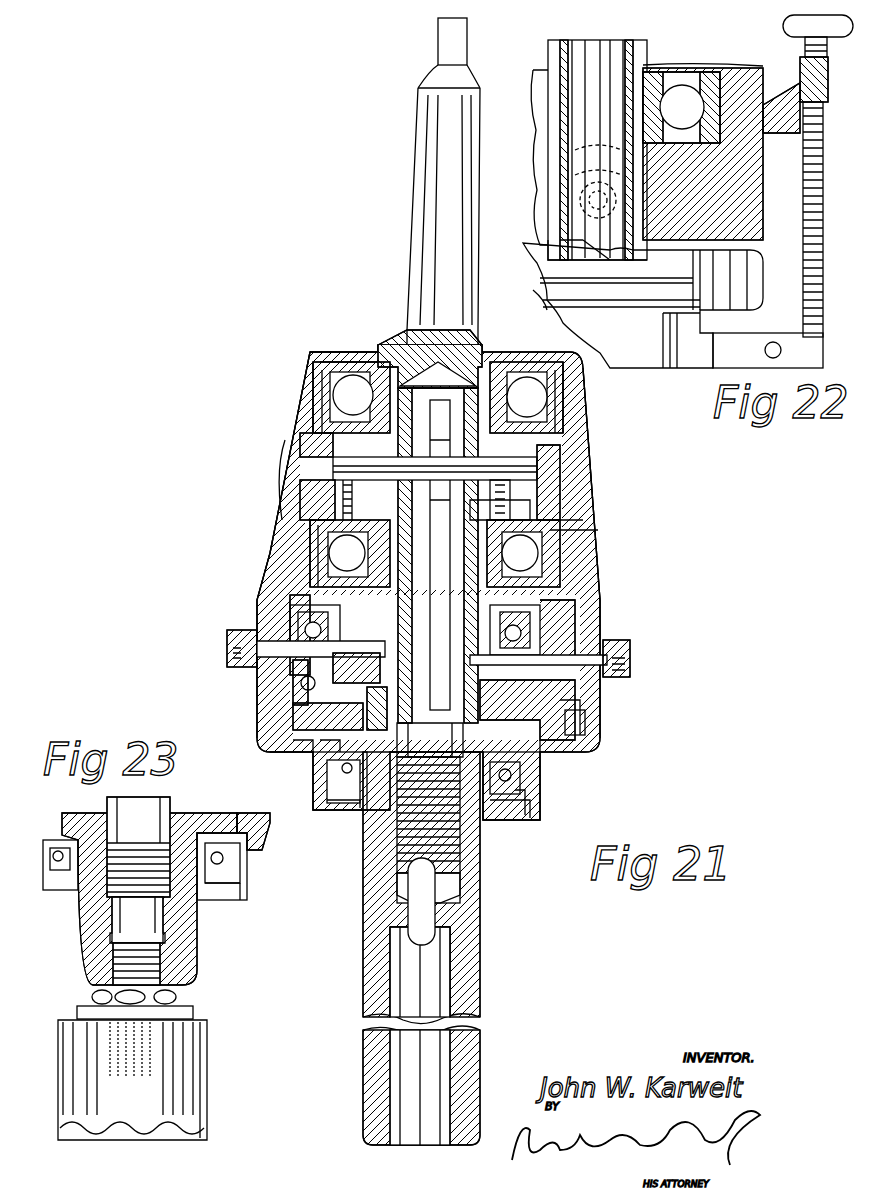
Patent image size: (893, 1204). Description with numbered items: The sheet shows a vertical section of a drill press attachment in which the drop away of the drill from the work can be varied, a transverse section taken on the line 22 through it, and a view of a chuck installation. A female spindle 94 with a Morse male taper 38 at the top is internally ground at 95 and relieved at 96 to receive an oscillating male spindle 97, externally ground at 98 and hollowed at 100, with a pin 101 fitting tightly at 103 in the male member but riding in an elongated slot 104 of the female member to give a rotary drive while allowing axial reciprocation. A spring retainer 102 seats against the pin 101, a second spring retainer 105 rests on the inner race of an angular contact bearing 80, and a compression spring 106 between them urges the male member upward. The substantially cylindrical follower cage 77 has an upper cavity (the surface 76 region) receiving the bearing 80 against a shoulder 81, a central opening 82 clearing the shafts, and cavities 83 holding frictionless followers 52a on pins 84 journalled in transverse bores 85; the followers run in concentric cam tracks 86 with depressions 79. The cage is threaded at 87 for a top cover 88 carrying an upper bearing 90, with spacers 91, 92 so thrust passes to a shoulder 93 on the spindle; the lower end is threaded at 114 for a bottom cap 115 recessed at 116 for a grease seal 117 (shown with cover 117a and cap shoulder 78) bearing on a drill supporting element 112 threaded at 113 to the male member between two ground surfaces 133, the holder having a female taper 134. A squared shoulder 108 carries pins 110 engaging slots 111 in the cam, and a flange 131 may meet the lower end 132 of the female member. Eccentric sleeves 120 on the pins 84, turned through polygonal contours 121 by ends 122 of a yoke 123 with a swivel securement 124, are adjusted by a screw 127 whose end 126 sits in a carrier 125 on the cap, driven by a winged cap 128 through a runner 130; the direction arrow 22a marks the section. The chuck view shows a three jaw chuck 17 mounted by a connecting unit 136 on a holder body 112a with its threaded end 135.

In FIG. 23, the three jaw chuck 17 is at (205, 1022).
In FIG. 21, the section line 22— 22 is at (650, 523).
In FIG. 21, the section arrow 22a is at (248, 544).
In FIG. 21, the Morse male taper 38 is at (410, 182).
In FIG. 21, the followers 52a is at (560, 610).
In FIG. 21, the housing 76 is at (610, 556).
In FIG. 21, the follower cage 77 is at (588, 583).
In FIG. 22, the follower cage 77 is at (740, 185).
In FIG. 21, the housing cap 78 is at (585, 546).
In FIG. 21, the cam dip or depression 79 is at (300, 745).
In FIG. 21, the frictionless angular contact bearing 80 is at (323, 552).
In FIG. 22, the frictionless angular contact bearing 80 is at (712, 70).
In FIG. 21, the shoulder 81 is at (310, 575).
In FIG. 21, the central opening 82 is at (245, 630).
In FIG. 21, the cavities 83 is at (545, 640).
In FIG. 21, the pins 84 is at (600, 652).
In FIG. 21, the transverse bores 85 is at (307, 675).
In FIG. 21, the concentric tracks 86 is at (290, 720).
In FIG. 21, the external threads 87 is at (285, 535).
In FIG. 21, the top cover 88 is at (312, 430).
In FIG. 22, the top cover 88 is at (660, 70).
In FIG. 21, the upper frictionless bearing 90 is at (575, 405).
In FIG. 21, the spacer 91 is at (545, 470).
In FIG. 21, the inner spacer 92 is at (500, 483).
In FIG. 21, the shoulder 93 is at (368, 352).
In FIG. 21, the female spindle 94 is at (476, 332).
In FIG. 22, the female spindle 94 is at (548, 50).
In FIG. 21, the internally ground surface 95 is at (465, 365).
In FIG. 21, the relief 96 is at (350, 498).
In FIG. 22, the relief 96 is at (560, 110).
In FIG. 21, the oscillating male spindle 97 is at (325, 792).
In FIG. 22, the oscillating male spindle 97 is at (560, 160).
In FIG. 21, the externally ground surface 98 is at (305, 700).
In FIG. 22, the externally ground surface 98 is at (560, 205).
In FIG. 21, the hollow 100 is at (452, 425).
In FIG. 22, the hollow 100 is at (615, 55).
In FIG. 21, the pin 101 is at (345, 462).
In FIG. 21, the spring retainer 102 is at (340, 472).
In FIG. 21, the tight fit 103 is at (318, 415).
In FIG. 21, the longitudinally elongated slot 104 is at (555, 460).
In FIG. 21, the second spring retainer 105 is at (512, 503).
In FIG. 21, the compression spring 106 is at (468, 500).
In FIG. 21, the squared shoulder 108 is at (555, 728).
In FIG. 21, the longitudinally extending pins 110 is at (548, 752).
In FIG. 21, the slots 111 is at (325, 758).
In FIG. 21, the drill supporting element 112 is at (375, 877).
In FIG. 23, the shaft body 112a is at (190, 940).
In FIG. 21, the threads 113 is at (390, 820).
In FIG. 23, the threads 113 is at (100, 825).
In FIG. 21, the threads 114 is at (580, 735).
In FIG. 21, the bottom cap 115 is at (540, 806).
In FIG. 22, the bottom cap 115 is at (610, 310).
In FIG. 23, the bottom cap 115 is at (247, 866).
In FIG. 21, the recess 116 is at (535, 785).
In FIG. 21, the grease seal 117 is at (498, 817).
In FIG. 23, the grease seal 117 is at (247, 890).
In FIG. 21, the bearing cover 117a is at (568, 712).
In FIG. 21, the eccentric sleeve 120 is at (230, 655).
In FIG. 21, the polygonal contour 121 is at (250, 668).
In FIG. 21, the yoke ends 122 is at (632, 652).
In FIG. 21, the yoke 123 is at (265, 620).
In FIG. 22, the swivel securement 124 is at (800, 80).
In FIG. 22, the carrier 125 is at (735, 333).
In FIG. 22, the screw end 126 is at (757, 295).
In FIG. 22, the adjusting screw 127 is at (803, 210).
In FIG. 22, the winged cap 128 is at (783, 26).
In FIG. 22, the runner 130 is at (785, 114).
In FIG. 21, the flange 131 is at (367, 700).
In FIG. 21, the lower end of female member 132 is at (430, 740).
In FIG. 22, the lower end of female member 132 is at (548, 247).
In FIG. 21, the ground surfaces 133 is at (320, 810).
In FIG. 23, the ground surfaces 133 is at (95, 928).
In FIG. 21, the female taper 134 is at (445, 963).
In FIG. 23, the threaded end 135 is at (160, 973).
In FIG. 23, the connecting unit 136 is at (92, 996).